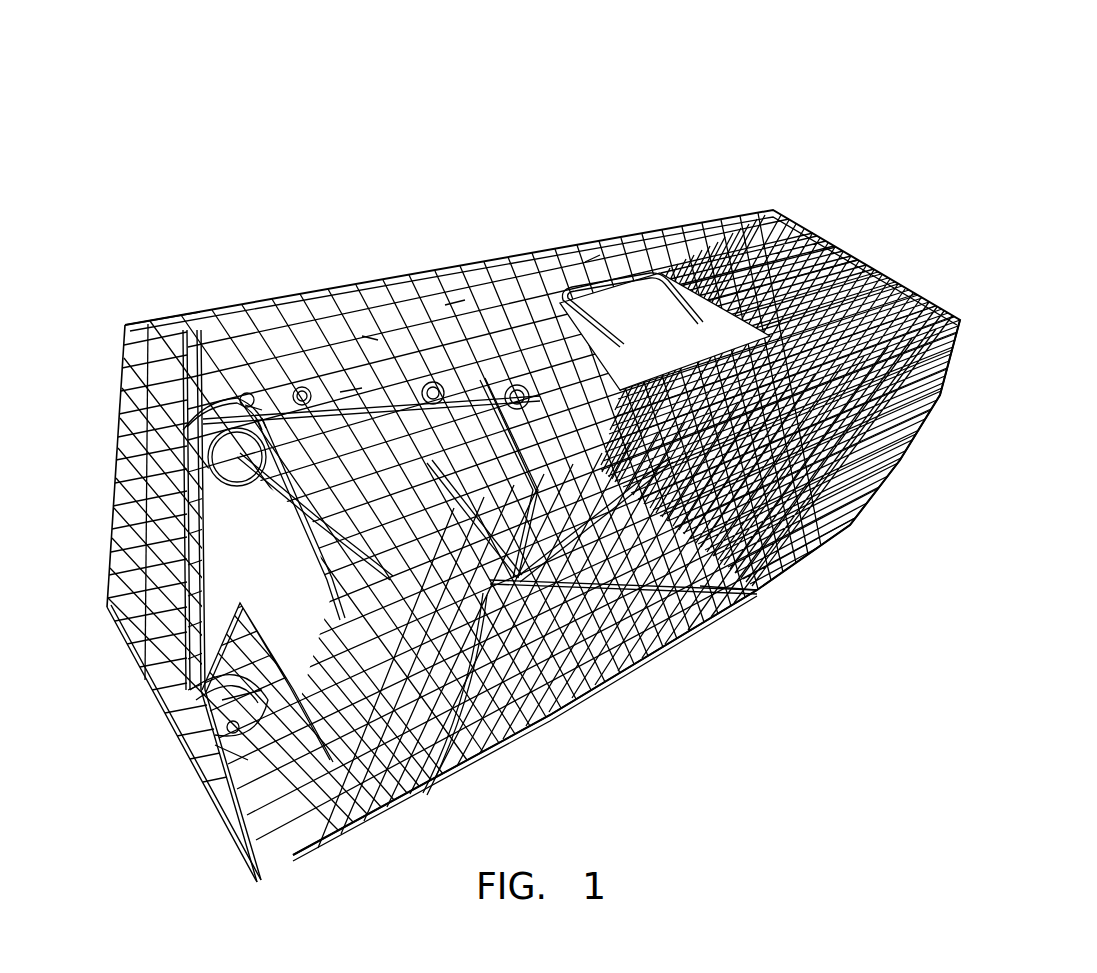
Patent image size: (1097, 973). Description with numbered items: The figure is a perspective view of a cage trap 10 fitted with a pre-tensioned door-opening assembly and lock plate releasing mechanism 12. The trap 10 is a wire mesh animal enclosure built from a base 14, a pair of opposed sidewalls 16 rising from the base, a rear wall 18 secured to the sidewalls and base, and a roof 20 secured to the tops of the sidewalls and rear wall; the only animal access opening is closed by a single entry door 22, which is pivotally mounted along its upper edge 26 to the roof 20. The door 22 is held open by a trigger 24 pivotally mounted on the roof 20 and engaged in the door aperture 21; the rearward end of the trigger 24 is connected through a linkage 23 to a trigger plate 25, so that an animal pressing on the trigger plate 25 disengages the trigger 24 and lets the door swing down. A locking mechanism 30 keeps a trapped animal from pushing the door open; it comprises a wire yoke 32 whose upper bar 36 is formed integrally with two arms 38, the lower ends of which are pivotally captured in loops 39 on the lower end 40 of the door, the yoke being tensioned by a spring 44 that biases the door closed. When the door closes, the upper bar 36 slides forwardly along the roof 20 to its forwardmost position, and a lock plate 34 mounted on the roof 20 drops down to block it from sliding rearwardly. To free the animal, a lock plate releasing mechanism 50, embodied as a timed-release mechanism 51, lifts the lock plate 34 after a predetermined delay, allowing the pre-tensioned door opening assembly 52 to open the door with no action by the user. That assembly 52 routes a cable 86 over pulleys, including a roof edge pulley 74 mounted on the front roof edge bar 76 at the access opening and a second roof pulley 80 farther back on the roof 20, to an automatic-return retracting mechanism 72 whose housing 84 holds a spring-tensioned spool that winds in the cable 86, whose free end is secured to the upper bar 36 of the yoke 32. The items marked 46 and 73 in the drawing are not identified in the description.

The cage trap 10 is at (788, 72).
The pre-tensioned door-opening assembly and lock plate releasing mechanism 12 is at (92, 260).
The base 14 is at (233, 862).
The sidewalls 16 is at (673, 623).
The rear wall 18 is at (887, 287).
The roof 20 is at (512, 385).
The door aperture 21 is at (500, 740).
The entry door 22 is at (150, 607).
The linkage 23 is at (598, 690).
The trigger 24 is at (560, 705).
The trigger plate 25 is at (760, 583).
The upper edge 26 is at (480, 370).
The locking mechanism 30 is at (297, 862).
The wire yoke 32 is at (190, 777).
The lock plate 34 is at (253, 398).
The upper bar 36 is at (420, 777).
The arms 38 is at (153, 538).
The loops 39 is at (153, 660).
The lower end 40 is at (203, 813).
The spring 44 is at (183, 725).
The treadle plate 46 is at (593, 257).
The lock plate releasing mechanism 50 is at (305, 385).
The timed-release mechanism 51 is at (350, 383).
The pre-tensioned door opening assembly 52 is at (247, 393).
The automatic-return retracting mechanism 72 is at (542, 355).
The top wire 73 is at (370, 330).
The roof edge pulley 74 is at (193, 421).
The front roof edge bar 76 is at (167, 337).
The second roof pulley 80 is at (455, 300).
The housing 84 is at (710, 590).
The cable 86 is at (627, 650).